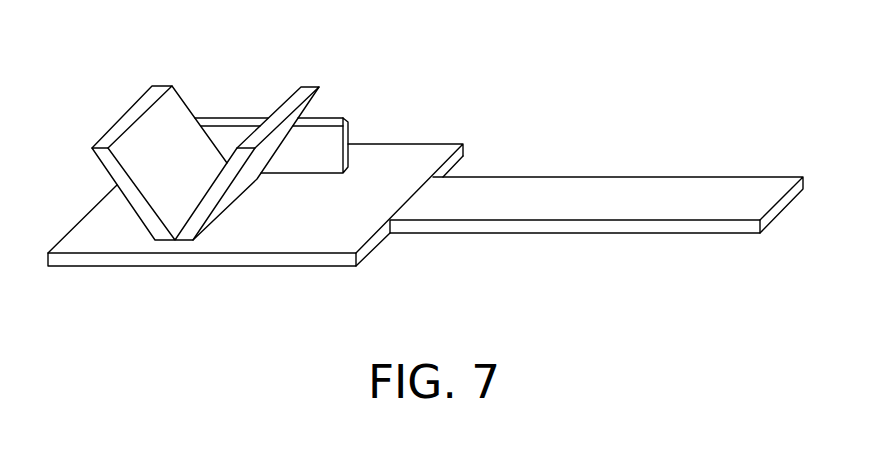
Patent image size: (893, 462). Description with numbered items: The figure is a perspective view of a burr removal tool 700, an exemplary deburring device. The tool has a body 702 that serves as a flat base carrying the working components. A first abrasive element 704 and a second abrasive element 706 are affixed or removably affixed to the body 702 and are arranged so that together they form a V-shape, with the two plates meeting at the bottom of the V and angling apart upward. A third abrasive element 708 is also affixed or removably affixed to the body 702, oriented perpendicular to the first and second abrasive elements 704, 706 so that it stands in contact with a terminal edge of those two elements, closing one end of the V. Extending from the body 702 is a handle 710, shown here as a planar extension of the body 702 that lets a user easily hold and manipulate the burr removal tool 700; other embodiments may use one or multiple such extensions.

The burr removal tool 700 is at (113, 85).
The body 702 is at (80, 272).
The first abrasive element 704 is at (125, 205).
The second abrasive element 706 is at (228, 204).
The third abrasive element 708 is at (342, 93).
The handle 710 is at (651, 245).